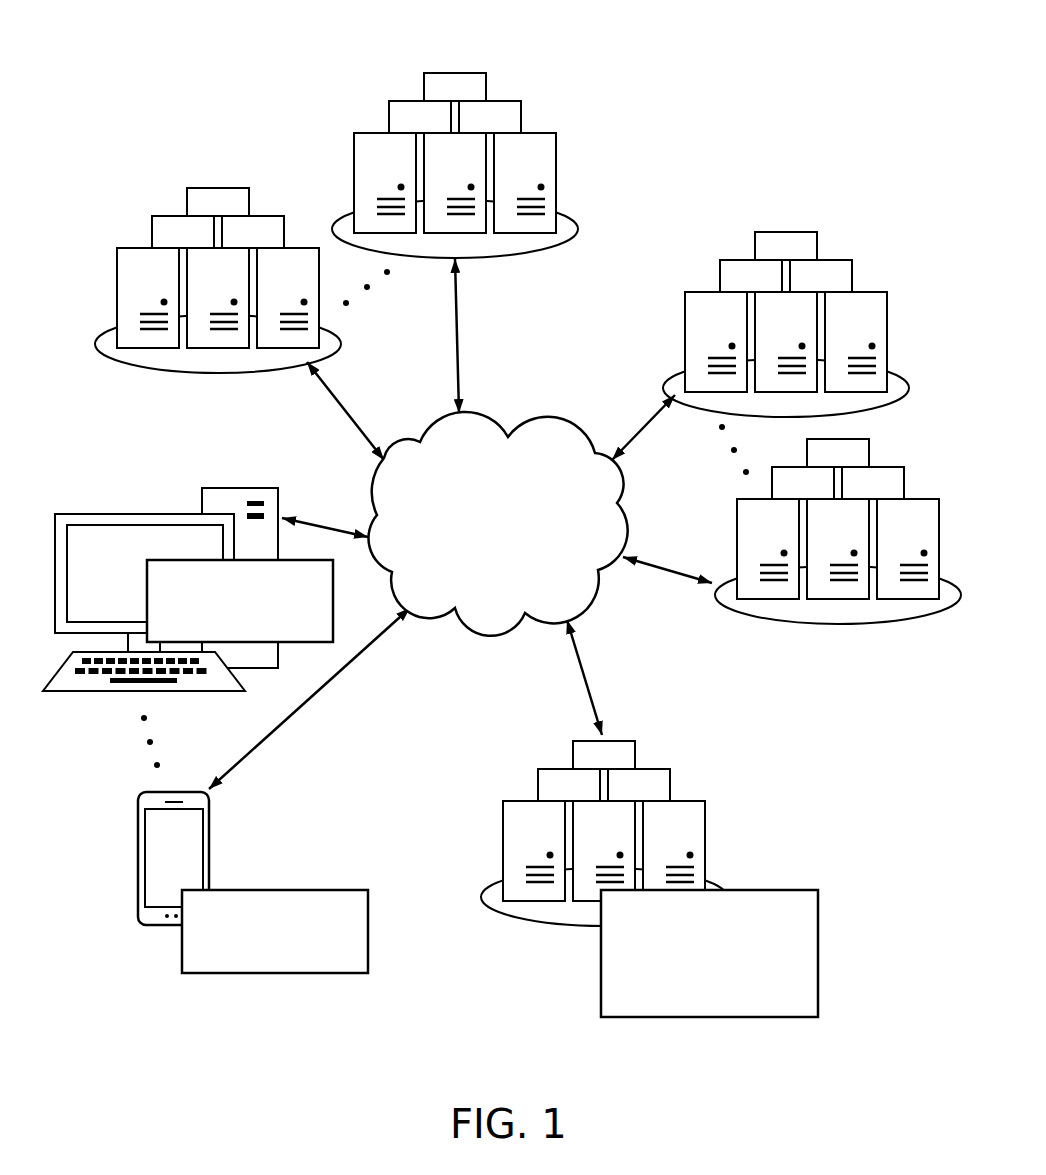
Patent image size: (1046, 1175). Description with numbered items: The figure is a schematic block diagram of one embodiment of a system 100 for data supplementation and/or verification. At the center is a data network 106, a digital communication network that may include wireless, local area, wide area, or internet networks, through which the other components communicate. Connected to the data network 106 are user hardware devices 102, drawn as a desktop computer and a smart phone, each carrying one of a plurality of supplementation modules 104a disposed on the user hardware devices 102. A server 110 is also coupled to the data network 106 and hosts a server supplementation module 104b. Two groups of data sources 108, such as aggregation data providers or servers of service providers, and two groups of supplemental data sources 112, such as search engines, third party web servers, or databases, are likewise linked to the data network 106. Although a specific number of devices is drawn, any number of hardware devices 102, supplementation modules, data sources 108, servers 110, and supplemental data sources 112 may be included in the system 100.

The system for data supplementation and/or verification 100 is at (123, 55).
The user hardware device 102 is at (130, 513).
The supplementation module 104a is at (257, 766).
The server supplementation module 104b is at (709, 953).
The data network 106 is at (497, 524).
The data source 108 is at (354, 145).
The server 110 is at (503, 808).
The supplemental data source 112 is at (685, 304).